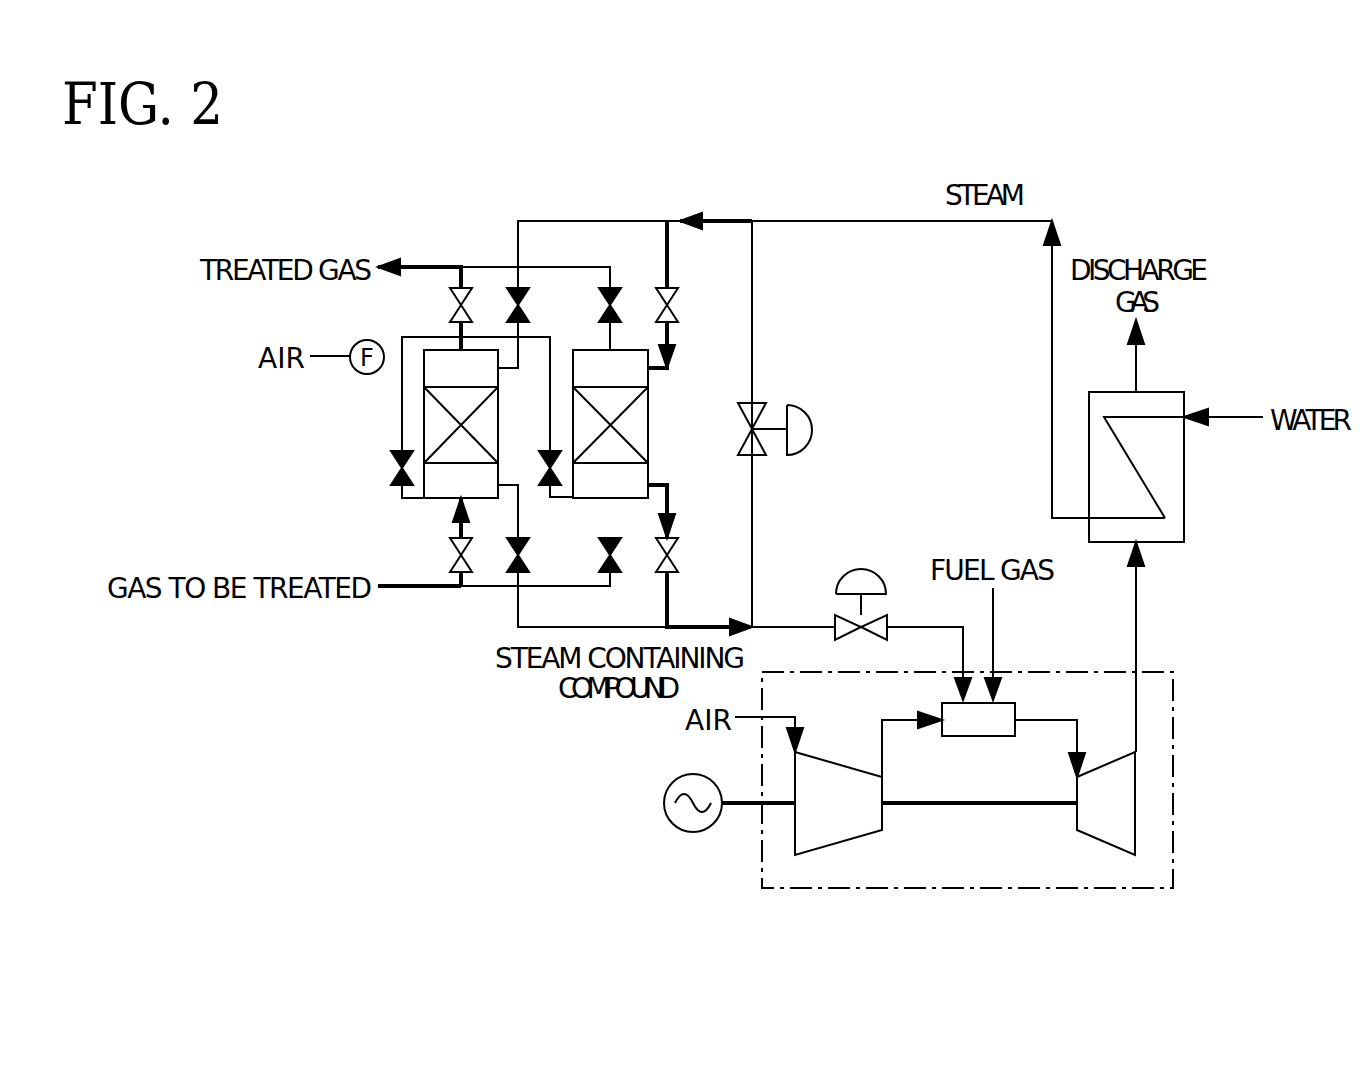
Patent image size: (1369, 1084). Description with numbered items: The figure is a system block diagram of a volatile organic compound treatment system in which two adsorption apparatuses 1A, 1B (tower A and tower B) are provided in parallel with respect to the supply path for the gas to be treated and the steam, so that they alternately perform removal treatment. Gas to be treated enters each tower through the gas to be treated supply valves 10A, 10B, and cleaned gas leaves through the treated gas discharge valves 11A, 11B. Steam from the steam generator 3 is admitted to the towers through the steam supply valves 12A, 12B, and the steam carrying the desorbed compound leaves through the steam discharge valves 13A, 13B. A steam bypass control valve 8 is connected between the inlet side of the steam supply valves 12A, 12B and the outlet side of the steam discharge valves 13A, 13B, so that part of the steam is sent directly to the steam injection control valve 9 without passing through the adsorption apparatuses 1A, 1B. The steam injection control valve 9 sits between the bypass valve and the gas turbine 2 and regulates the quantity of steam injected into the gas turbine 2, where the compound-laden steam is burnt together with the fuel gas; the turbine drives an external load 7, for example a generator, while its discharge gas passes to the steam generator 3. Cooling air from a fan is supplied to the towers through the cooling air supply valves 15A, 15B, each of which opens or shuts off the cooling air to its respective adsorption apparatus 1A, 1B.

The adsorption apparatus 1A is at (424, 410).
The adsorption apparatus 1B is at (648, 420).
The gas turbine 2 is at (1173, 765).
The steam generator 3 is at (1184, 492).
The external load 7 is at (693, 832).
The steam bypass control valve 8 is at (805, 428).
The steam injection control valve 9 is at (861, 576).
The gas to be treated supply valve 10A is at (452, 562).
The gas to be treated supply valve 10B is at (600, 570).
The treated gas discharge valve 11A is at (478, 297).
The treated gas discharge valve 11B is at (620, 293).
The steam supply valve 12A is at (512, 297).
The steam supply valve 12B is at (672, 300).
The steam discharge valve 13A is at (508, 565).
The steam discharge valve 13B is at (675, 556).
The cooling air supply valve 15A is at (395, 470).
The cooling air supply valve 15B is at (541, 487).